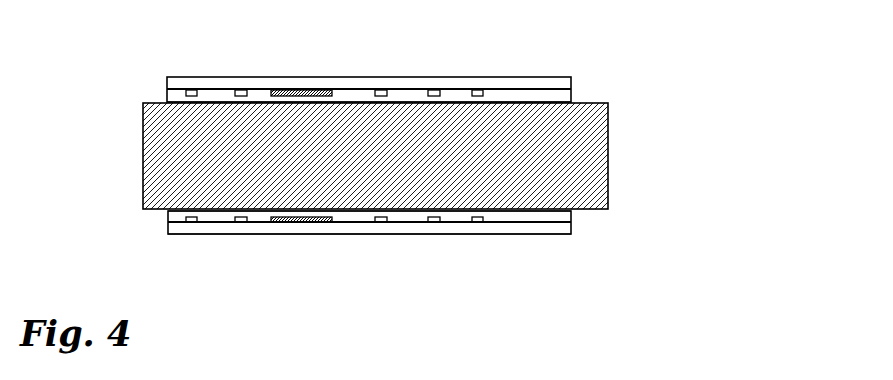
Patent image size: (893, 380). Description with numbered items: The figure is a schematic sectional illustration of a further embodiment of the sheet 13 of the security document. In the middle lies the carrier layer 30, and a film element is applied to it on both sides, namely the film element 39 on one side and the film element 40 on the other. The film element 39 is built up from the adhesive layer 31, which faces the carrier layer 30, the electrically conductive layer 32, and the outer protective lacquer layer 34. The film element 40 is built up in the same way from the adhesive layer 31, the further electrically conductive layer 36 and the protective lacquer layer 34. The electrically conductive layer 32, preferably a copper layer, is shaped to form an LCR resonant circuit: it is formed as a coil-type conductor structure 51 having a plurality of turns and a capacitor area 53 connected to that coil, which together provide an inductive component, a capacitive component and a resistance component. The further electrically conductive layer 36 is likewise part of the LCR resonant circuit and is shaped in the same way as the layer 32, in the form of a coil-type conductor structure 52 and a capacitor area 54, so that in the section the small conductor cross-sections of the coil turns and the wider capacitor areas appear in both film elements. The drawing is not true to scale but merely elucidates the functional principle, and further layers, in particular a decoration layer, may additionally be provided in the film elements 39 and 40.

The sheet 13 is at (728, 146).
The carrier layer 30 is at (143, 141).
The adhesive layer 31 is at (571, 99).
The electrically conductive layer 32 is at (571, 87).
The protective lacquer layer 34 is at (571, 78).
The further electrically conductive layer 36 is at (571, 228).
The film element 39 is at (165, 77).
The film element 40 is at (165, 211).
The coil-type conductor structure 51 is at (480, 91).
The coil-type conductor structure 52 is at (480, 223).
The capacitor area 53 is at (307, 91).
The capacitor area 54 is at (307, 223).